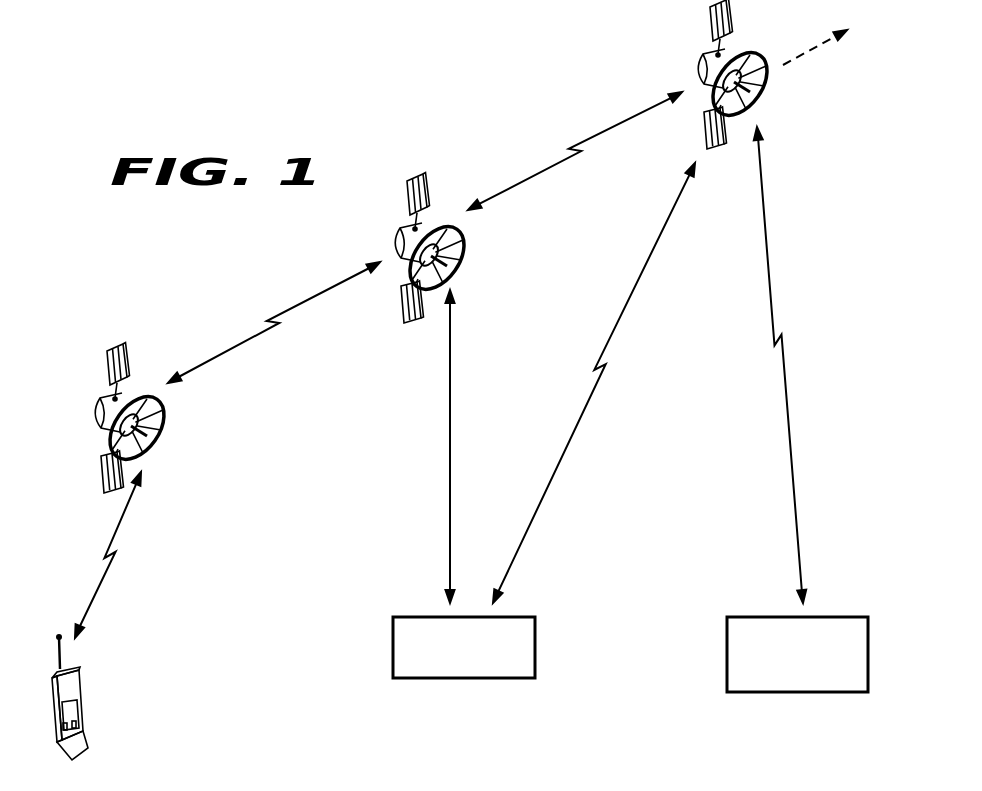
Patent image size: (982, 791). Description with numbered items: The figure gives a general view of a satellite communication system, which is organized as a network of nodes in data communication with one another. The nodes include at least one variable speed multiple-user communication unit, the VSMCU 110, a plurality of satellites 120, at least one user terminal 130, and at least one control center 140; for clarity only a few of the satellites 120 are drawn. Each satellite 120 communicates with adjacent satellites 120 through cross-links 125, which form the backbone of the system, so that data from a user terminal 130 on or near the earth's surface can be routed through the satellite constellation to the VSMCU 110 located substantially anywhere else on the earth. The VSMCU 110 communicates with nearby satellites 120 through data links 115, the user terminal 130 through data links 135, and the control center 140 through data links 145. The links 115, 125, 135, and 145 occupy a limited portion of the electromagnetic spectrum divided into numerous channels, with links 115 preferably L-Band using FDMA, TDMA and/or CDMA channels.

The variable speed multiple-user communication unit (VSMCU) 110 is at (393, 647).
The data links 115 is at (450, 373).
The satellites 120 is at (127, 362).
The cross-links 125 is at (297, 306).
The user terminal 130 is at (83, 680).
The data links 135 is at (124, 517).
The control center 140 is at (727, 652).
The data links 145 is at (767, 232).